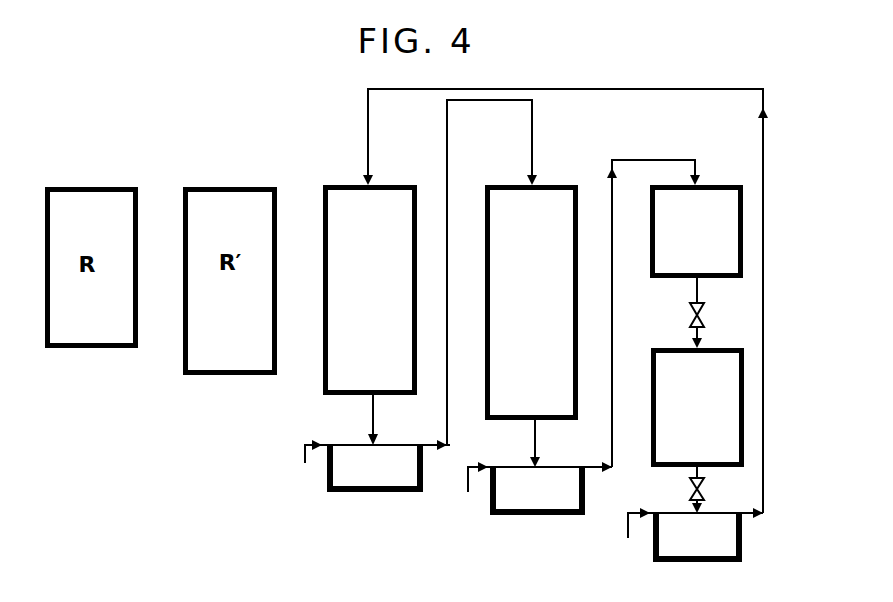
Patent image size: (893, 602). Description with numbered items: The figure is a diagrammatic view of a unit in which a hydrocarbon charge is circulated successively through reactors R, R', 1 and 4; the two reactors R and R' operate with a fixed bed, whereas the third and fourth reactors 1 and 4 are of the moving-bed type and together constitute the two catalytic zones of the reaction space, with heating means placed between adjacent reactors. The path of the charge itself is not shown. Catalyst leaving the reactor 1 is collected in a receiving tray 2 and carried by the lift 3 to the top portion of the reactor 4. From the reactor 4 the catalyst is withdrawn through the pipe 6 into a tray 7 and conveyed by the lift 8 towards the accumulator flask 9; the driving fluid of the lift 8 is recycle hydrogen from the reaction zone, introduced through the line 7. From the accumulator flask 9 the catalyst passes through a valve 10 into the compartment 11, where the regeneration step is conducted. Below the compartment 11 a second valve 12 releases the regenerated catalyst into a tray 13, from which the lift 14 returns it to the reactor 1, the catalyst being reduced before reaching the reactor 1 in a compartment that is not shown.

The reactor 1 is at (320, 184).
The first collecting tray 2 is at (375, 467).
The lift 3 is at (447, 133).
The reactor 4 is at (570, 184).
The pipe 6 is at (533, 448).
The line 7 is at (537, 490).
The lift 8 is at (613, 297).
The accumulator flask 9 is at (650, 249).
The valve 10 is at (693, 333).
The compartment 11 is at (738, 348).
The valve 12 is at (694, 472).
The third collecting tray 13 is at (690, 536).
The lift 14 is at (762, 131).